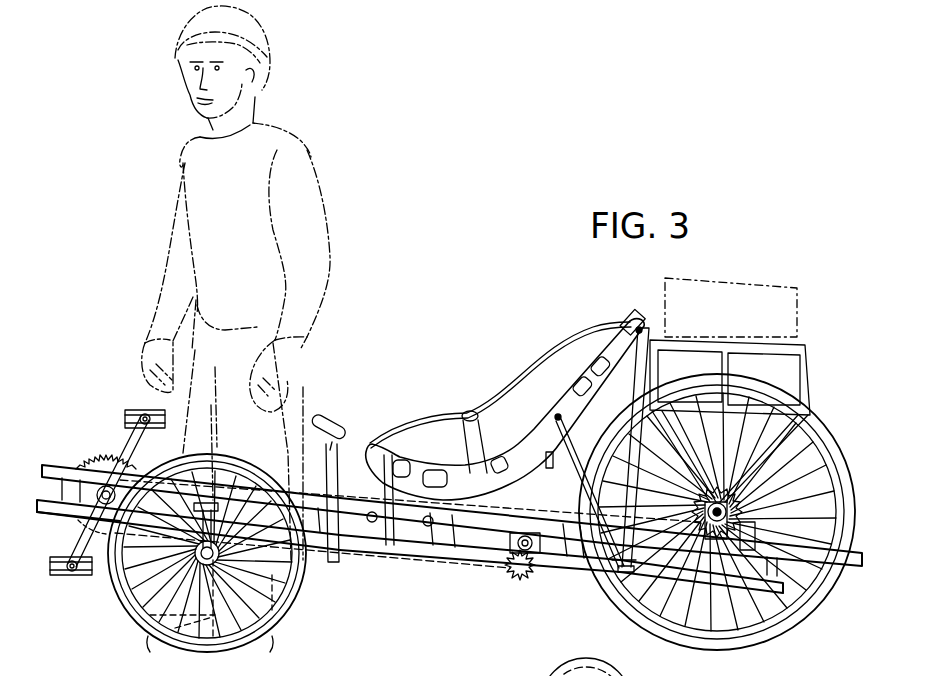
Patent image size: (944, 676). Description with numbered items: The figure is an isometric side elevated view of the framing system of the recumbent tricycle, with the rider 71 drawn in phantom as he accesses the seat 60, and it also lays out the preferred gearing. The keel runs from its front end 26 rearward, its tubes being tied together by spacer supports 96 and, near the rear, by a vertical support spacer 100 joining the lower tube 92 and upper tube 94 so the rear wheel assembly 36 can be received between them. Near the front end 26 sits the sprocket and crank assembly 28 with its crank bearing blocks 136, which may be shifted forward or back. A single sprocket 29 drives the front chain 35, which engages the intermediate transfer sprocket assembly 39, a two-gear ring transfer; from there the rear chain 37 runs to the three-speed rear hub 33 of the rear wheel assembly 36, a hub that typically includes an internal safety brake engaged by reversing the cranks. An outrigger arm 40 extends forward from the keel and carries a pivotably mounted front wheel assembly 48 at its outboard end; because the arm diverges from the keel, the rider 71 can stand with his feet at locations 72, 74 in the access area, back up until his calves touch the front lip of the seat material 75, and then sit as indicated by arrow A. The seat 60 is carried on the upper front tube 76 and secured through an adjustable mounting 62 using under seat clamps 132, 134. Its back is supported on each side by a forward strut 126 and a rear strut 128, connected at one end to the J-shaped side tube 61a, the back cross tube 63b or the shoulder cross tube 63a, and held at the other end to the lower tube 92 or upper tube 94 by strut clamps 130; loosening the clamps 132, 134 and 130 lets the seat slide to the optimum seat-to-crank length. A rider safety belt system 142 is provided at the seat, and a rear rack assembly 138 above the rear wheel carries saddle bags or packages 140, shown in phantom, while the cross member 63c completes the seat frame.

The rider 71 is at (238, 211).
The front end 26 is at (29, 486).
The spacer support 96 is at (29, 497).
The front chain 35 is at (463, 560).
The vertical support spacer 100 is at (765, 582).
The lower tube 92 is at (753, 583).
The adjustable mounting 62 is at (398, 512).
The under seat clamp 132 is at (372, 522).
The under seat clamp 134 is at (428, 527).
The rear chain 37 is at (575, 558).
The intermediate transfer sprocket assembly 39 is at (536, 583).
The single sprocket 29 is at (88, 462).
The sprocket and crank assembly 28 is at (119, 437).
The crank bearing block 136 is at (101, 478).
The location 72 is at (285, 638).
The location 74 is at (135, 618).
The outrigger arm 40 is at (229, 491).
The front wheel assembly 48 is at (200, 442).
The seat material front lip 75 is at (363, 448).
The upper front tube 76 is at (320, 459).
The arrow A is at (551, 441).
The seat 60 is at (517, 416).
The forward strut 126 is at (558, 414).
The rider safety belt system 142 is at (460, 414).
The rear strut 128 is at (634, 330).
The shoulder cross tube 63a is at (641, 331).
The J-shaped side tube 61a is at (630, 318).
The upper tube 94 is at (635, 570).
The strut clamp 130 is at (662, 538).
The back cross tube 63b is at (552, 470).
The seat mount 63c is at (390, 450).
The rear wheel assembly 36 is at (812, 420).
The rear hub 33 is at (735, 507).
The rear rack assembly 138 is at (809, 334).
The saddle bags or packages 140 is at (770, 290).